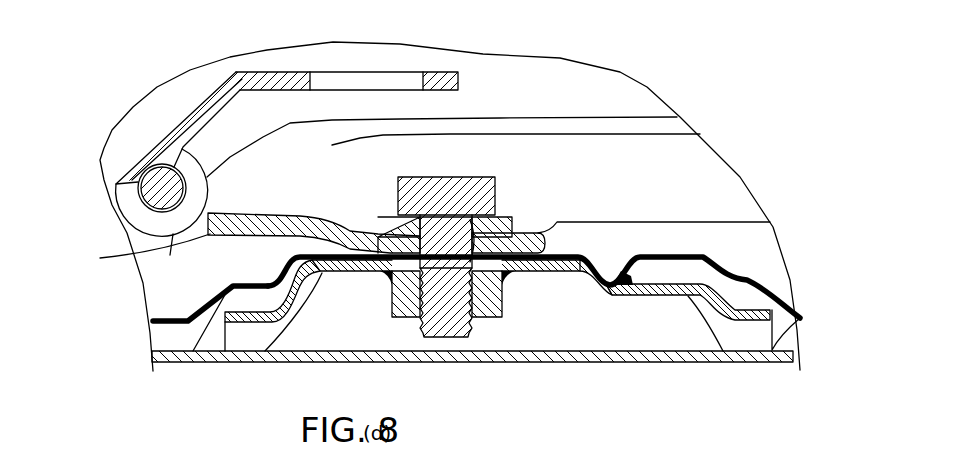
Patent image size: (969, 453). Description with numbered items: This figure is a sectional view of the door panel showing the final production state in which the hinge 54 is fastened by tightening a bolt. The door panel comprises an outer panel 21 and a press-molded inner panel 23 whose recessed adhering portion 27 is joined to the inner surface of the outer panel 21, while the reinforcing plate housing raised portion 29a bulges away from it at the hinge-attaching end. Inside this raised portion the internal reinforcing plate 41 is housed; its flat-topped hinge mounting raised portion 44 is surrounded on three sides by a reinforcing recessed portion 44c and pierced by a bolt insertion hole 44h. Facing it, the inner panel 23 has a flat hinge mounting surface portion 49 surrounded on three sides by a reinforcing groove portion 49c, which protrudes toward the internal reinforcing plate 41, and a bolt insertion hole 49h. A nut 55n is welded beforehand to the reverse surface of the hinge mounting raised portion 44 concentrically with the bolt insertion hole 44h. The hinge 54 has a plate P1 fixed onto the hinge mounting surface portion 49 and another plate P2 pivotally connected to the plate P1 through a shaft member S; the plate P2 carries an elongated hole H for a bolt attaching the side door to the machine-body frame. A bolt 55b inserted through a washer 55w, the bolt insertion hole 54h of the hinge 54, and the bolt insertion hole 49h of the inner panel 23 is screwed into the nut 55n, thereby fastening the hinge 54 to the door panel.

The outer panel 21 is at (653, 363).
The inner panel 23 is at (152, 312).
The adhering portion 27 is at (170, 323).
The reinforcing plate housing raised portion 29a is at (204, 352).
The internal reinforcing plate 41 is at (253, 322).
The hinge mounting raised portion 44 is at (553, 227).
The reinforcing recessed portion 44c is at (660, 284).
The bolt insertion hole 44h is at (410, 298).
The hinge mounting surface portion 49 is at (572, 259).
The reinforcing groove portion 49c is at (610, 282).
The bolt insertion hole 49h is at (470, 215).
The hinge 54 is at (107, 147).
The bolt insertion hole 54h is at (397, 217).
The bolt 55b is at (450, 182).
The nut 55n is at (502, 317).
The washer 55w is at (512, 220).
The elongated hole H is at (410, 80).
The plate P1 is at (100, 258).
The plate P2 is at (187, 110).
The shaft member S is at (160, 190).